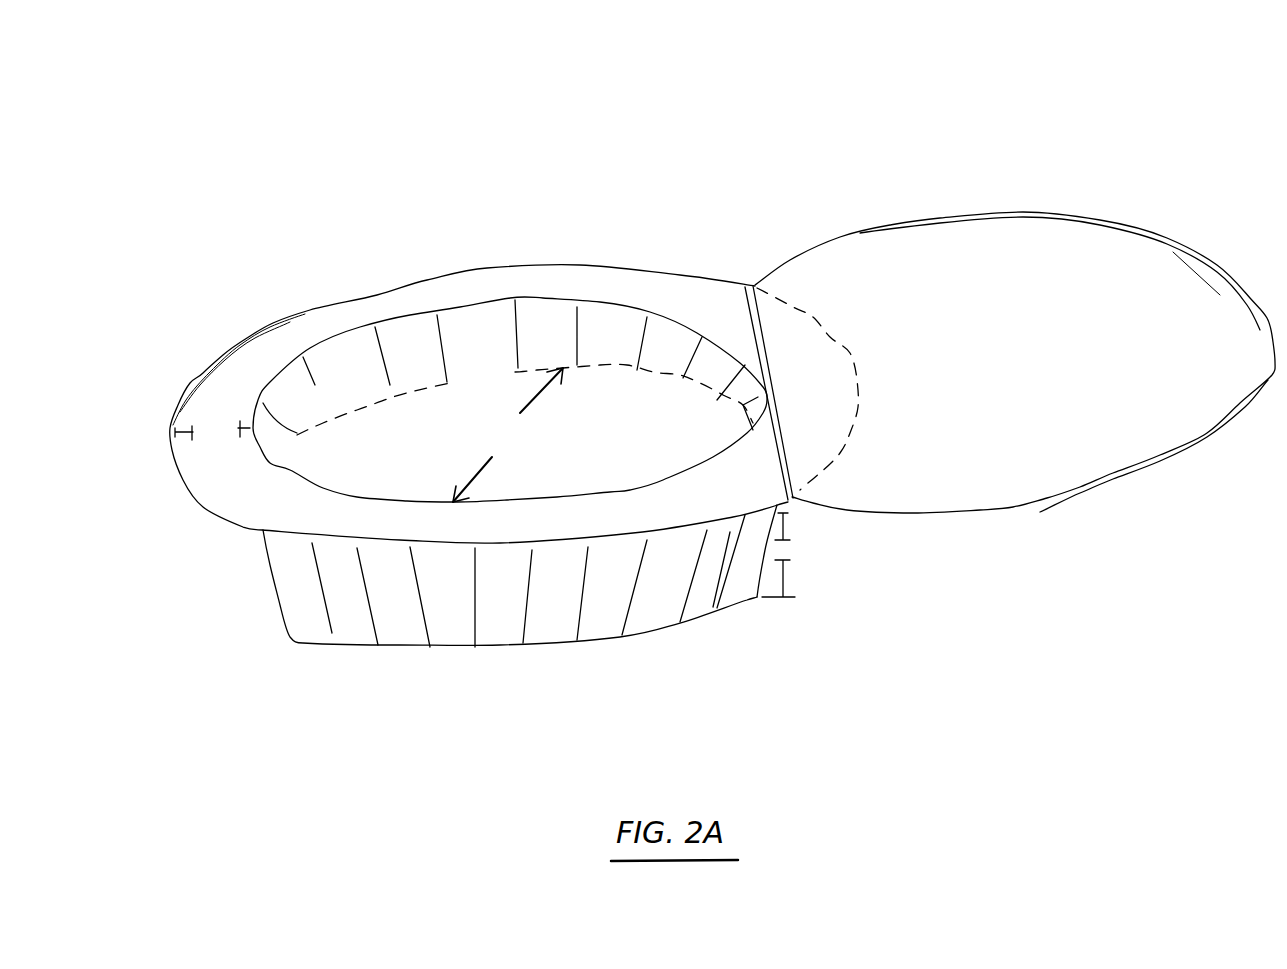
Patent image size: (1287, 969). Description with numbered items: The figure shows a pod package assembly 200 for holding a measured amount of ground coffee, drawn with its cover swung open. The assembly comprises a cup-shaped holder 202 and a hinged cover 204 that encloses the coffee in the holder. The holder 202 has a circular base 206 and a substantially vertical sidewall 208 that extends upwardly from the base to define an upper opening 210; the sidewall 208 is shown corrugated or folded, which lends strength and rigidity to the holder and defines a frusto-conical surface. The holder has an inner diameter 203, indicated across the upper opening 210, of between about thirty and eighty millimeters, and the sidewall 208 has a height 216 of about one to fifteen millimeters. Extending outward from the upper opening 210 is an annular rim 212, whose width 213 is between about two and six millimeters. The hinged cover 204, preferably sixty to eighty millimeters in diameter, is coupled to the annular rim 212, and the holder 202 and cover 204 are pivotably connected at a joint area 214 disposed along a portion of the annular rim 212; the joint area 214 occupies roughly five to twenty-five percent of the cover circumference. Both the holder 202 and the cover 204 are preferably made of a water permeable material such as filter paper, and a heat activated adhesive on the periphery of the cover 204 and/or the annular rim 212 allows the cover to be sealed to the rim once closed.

The pod package assembly 200 is at (620, 118).
The cup-shaped holder 202 is at (257, 580).
The inner diameter 203 is at (508, 435).
The hinged cover 204 is at (1062, 212).
The circular base 206 is at (475, 430).
The sidewall 208 is at (283, 602).
The upper opening 210 is at (573, 325).
The annular rim 212 is at (248, 352).
The width 213 is at (222, 437).
The joint area 214 is at (823, 370).
The height 216 is at (790, 548).